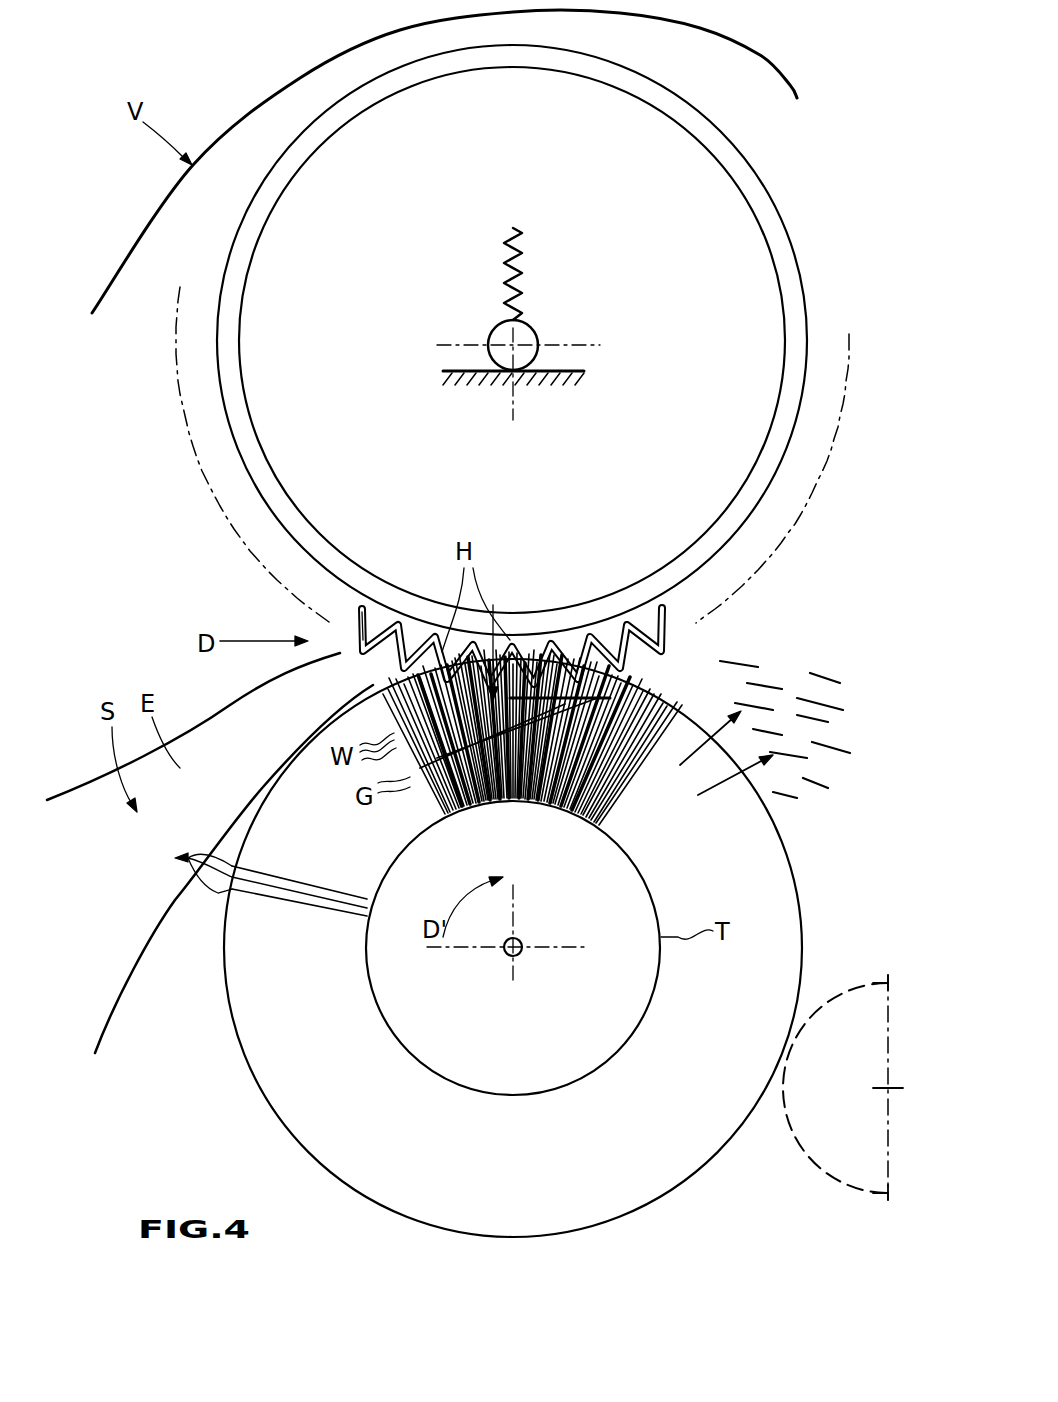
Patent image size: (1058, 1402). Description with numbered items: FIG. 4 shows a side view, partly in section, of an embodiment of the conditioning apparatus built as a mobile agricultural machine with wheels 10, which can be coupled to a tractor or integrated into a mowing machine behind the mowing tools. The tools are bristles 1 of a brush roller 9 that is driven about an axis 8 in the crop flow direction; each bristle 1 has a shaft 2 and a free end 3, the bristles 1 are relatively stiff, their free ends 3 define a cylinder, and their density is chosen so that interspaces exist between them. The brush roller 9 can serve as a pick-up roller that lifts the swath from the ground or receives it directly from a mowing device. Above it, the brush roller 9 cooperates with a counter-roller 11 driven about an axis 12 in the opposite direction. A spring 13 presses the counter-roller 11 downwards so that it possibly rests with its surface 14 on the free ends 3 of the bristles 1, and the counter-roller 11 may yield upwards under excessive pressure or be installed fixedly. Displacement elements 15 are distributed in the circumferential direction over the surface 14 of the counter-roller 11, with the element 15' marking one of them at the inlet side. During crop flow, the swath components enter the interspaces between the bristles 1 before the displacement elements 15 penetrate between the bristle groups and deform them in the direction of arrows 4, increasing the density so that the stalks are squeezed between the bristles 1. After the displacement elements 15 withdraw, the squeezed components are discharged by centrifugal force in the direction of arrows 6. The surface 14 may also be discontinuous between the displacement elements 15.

The bristle 1 is at (283, 902).
The shaft 2 is at (300, 895).
The free end 3 is at (194, 870).
The arrows 4 is at (603, 690).
The arrow 6 is at (738, 776).
The axis 8 is at (525, 942).
The brush roller 9 is at (805, 861).
The wheels 10 is at (857, 980).
The counter-roller 11 is at (742, 345).
The axis 12 is at (516, 344).
The spring 13 is at (524, 258).
The surface 14 is at (778, 507).
The displacement elements 15 is at (512, 607).
The end of corrugated plate 15' is at (330, 659).